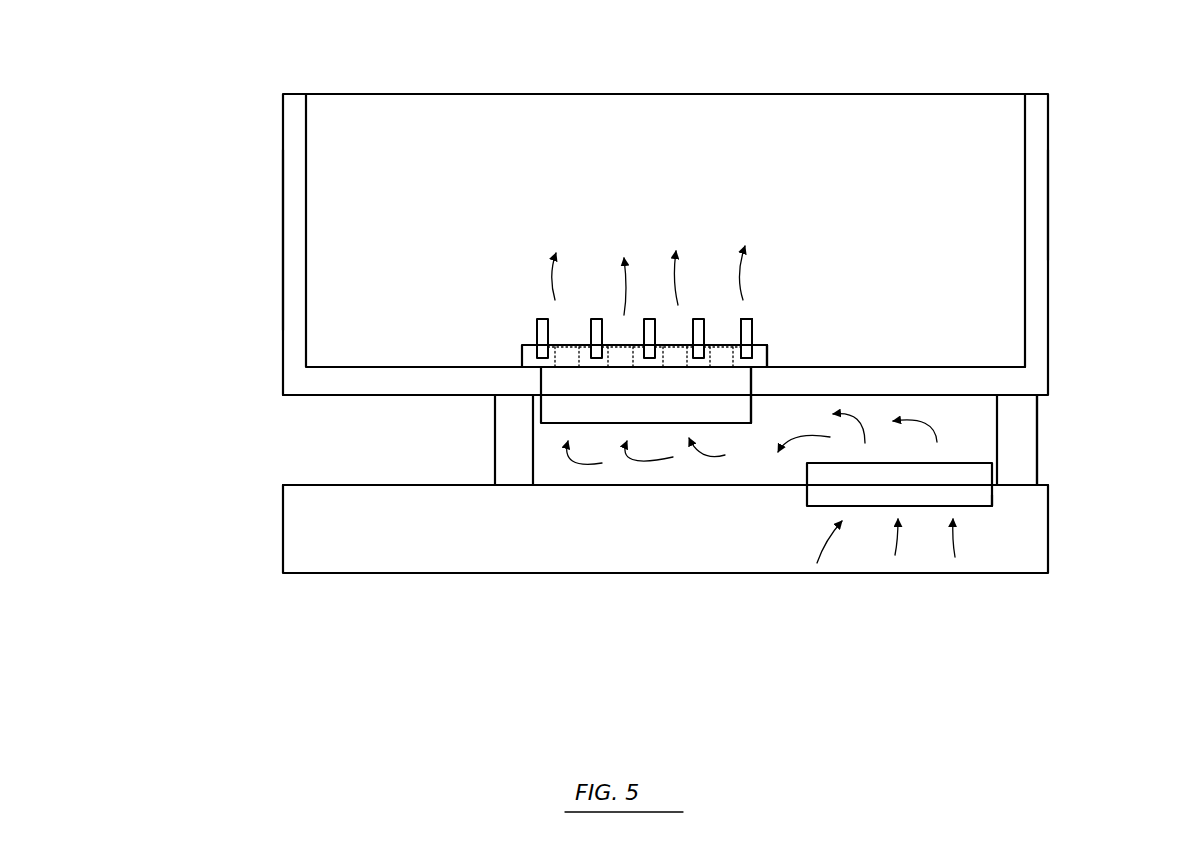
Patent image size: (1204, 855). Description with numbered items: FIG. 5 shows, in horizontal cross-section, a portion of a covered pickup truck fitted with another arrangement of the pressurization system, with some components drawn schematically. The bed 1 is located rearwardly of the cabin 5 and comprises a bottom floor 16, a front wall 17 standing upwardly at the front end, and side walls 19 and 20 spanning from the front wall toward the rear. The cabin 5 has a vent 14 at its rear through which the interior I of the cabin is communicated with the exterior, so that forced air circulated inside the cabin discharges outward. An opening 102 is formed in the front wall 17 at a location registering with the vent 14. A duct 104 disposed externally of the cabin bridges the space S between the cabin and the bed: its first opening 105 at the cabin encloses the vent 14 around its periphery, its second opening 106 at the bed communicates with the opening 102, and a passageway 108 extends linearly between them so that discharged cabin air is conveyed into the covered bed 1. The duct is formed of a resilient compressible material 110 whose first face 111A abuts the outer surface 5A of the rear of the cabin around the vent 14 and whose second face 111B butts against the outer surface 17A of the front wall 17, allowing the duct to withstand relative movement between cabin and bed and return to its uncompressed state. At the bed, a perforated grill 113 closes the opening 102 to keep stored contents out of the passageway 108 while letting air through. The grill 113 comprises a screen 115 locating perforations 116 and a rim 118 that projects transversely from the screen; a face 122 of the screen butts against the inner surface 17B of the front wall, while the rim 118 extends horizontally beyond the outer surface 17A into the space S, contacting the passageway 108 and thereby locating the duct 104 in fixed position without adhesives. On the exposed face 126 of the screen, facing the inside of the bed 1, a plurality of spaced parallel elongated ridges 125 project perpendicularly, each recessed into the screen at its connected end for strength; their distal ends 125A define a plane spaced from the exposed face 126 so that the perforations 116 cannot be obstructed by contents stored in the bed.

The bed 1 is at (1052, 274).
The cabin 5 is at (1052, 548).
The outer surface of the rear of the cabin 5A is at (755, 473).
The vent 14 is at (993, 493).
The bottom floor 16 is at (897, 123).
The front wall 17 is at (318, 385).
The outer surface of the bed at the front wall 17A is at (947, 397).
The inner surface of the bed at the front wall 17B is at (905, 367).
The side wall 19 is at (1040, 208).
The side wall 20 is at (303, 252).
The opening 102 is at (593, 377).
The duct 104 is at (1039, 466).
The first opening 105 is at (524, 480).
The second opening 106 is at (527, 402).
The passageway 108 is at (975, 442).
The compressible material 110 is at (512, 443).
The first face 111A is at (513, 487).
The second face 111B is at (1017, 395).
The perforated grill 113 is at (529, 344).
The screen 115 is at (771, 355).
The perforations 116 is at (725, 352).
The rim 118 is at (727, 410).
The face of the screen 122 is at (760, 379).
The elongated ridges 125 is at (748, 333).
The distal ends of the ridges 125A is at (752, 310).
The exposed face 126 is at (758, 345).
The interior of the cabin I is at (637, 548).
The space S is at (282, 447).